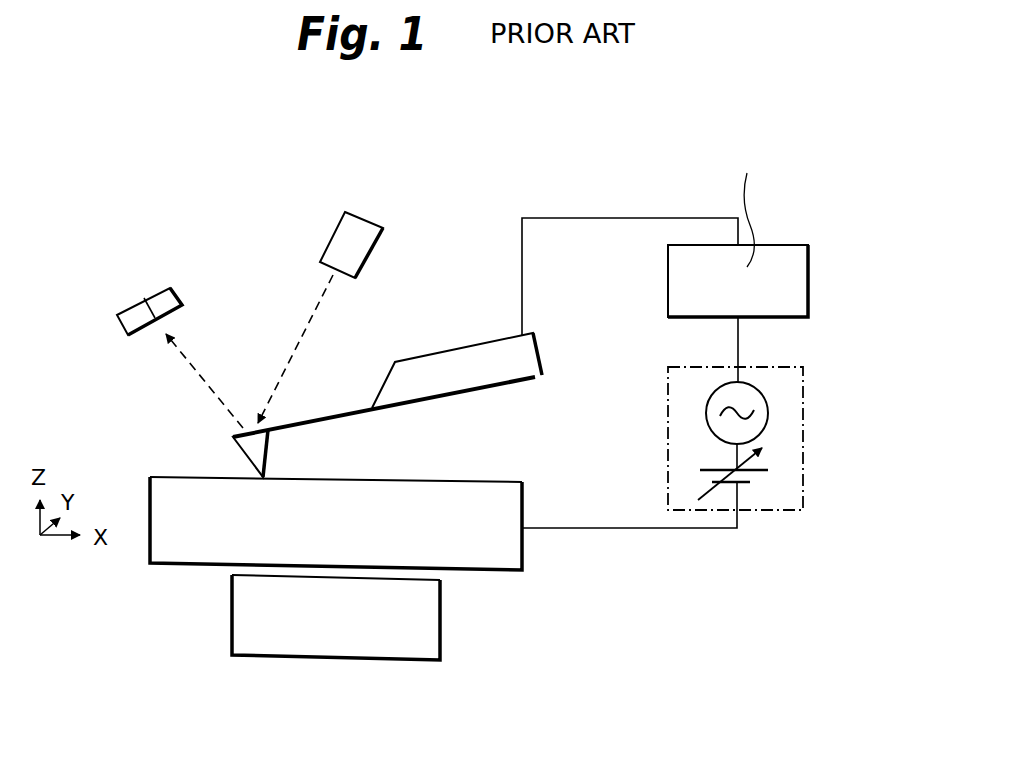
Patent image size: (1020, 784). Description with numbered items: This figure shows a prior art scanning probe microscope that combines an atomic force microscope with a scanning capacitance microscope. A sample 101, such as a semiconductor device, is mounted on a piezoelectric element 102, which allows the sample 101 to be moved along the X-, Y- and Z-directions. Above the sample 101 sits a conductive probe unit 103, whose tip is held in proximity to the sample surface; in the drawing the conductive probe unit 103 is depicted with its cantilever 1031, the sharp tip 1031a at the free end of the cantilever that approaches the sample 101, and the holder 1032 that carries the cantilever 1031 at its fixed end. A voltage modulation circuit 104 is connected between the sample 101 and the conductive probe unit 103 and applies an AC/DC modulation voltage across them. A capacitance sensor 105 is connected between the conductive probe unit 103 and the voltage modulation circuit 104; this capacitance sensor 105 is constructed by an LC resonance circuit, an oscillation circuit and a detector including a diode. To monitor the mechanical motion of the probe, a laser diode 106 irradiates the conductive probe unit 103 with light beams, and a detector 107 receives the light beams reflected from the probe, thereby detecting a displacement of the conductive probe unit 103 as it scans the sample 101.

The sample 101 is at (162, 502).
The piezoelectric element 102 is at (232, 625).
The conductive probe unit 103 is at (332, 379).
The cantilever 1031 is at (332, 417).
The probe tip 1031a is at (257, 448).
The cantilever holder 1032 is at (457, 380).
The voltage modulation circuit 104 is at (803, 430).
The capacitance sensor 105 is at (810, 280).
The laser diode 106 is at (384, 228).
The detector 107 is at (162, 290).